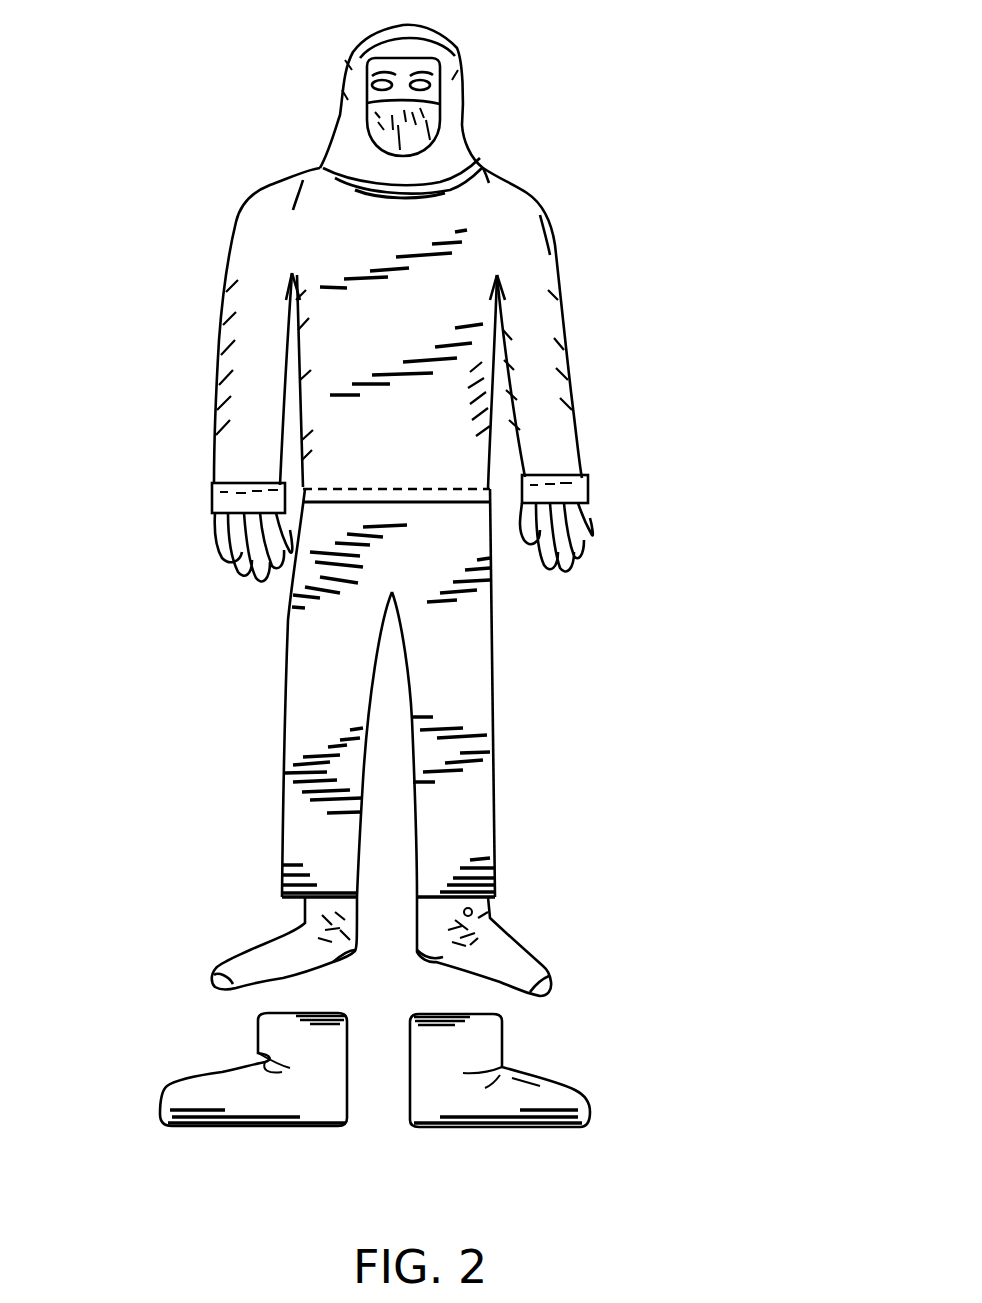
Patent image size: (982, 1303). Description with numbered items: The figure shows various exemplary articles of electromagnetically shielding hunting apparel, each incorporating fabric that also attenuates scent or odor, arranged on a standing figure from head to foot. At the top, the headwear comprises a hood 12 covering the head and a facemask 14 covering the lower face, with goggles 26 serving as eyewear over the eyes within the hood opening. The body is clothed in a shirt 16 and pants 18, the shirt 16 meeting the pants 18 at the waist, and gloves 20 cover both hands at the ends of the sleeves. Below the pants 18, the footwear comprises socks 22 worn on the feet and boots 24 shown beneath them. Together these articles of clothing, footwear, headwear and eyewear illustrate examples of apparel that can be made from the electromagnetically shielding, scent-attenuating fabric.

The hood 12 is at (462, 95).
The facemask 14 is at (417, 132).
The shirt 16 is at (457, 230).
The pants 18 is at (450, 717).
The gloves 20 is at (237, 512).
The socks 22 is at (277, 952).
The boots 24 is at (265, 1058).
The goggles 26 is at (420, 56).